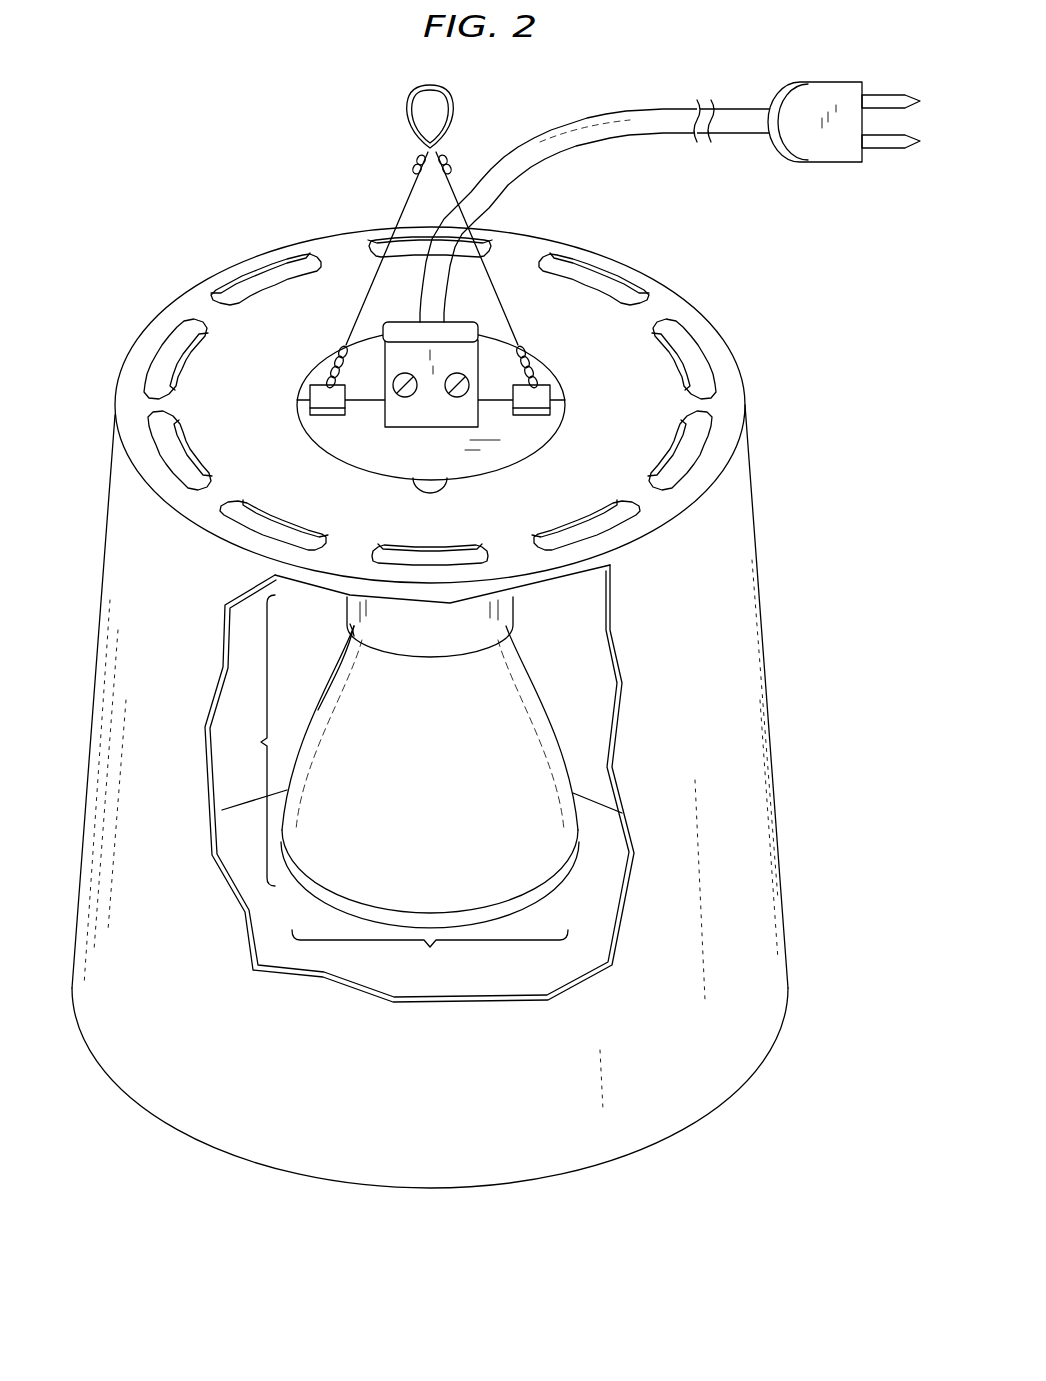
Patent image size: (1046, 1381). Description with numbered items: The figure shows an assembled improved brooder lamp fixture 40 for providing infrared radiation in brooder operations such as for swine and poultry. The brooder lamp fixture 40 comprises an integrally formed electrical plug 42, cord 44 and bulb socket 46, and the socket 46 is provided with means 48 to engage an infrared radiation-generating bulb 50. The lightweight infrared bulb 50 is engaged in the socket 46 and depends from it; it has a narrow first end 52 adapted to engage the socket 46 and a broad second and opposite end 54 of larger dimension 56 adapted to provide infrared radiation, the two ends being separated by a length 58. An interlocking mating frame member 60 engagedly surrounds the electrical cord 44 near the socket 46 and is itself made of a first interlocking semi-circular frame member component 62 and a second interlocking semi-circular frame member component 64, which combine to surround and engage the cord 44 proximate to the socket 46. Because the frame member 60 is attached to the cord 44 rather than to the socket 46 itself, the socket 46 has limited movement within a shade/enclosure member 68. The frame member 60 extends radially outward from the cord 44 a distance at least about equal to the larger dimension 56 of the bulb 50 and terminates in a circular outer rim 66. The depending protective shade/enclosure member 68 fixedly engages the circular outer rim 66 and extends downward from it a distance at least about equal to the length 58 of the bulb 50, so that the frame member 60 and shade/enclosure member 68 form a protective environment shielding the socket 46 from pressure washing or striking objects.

The brooder lamp fixture 40 is at (745, 402).
The electrical plug 42 is at (828, 165).
The cord 44 is at (582, 117).
The bulb socket 46 is at (512, 608).
The means to engage an infrared radiation-generating bulb 48 is at (350, 628).
The infrared radiation-generating bulb 50 is at (552, 725).
The narrow first end 52 is at (345, 655).
The broad second and opposite end 54 is at (500, 922).
The larger dimension 56 is at (430, 954).
The length 58 is at (251, 740).
The interlocking mating frame member 60 is at (540, 428).
The first interlocking semi-circular frame member component 62 is at (545, 372).
The second interlocking semi-circular frame member component 64 is at (512, 445).
The circular outer rim 66 is at (340, 462).
The shade/enclosure member 68 is at (762, 562).